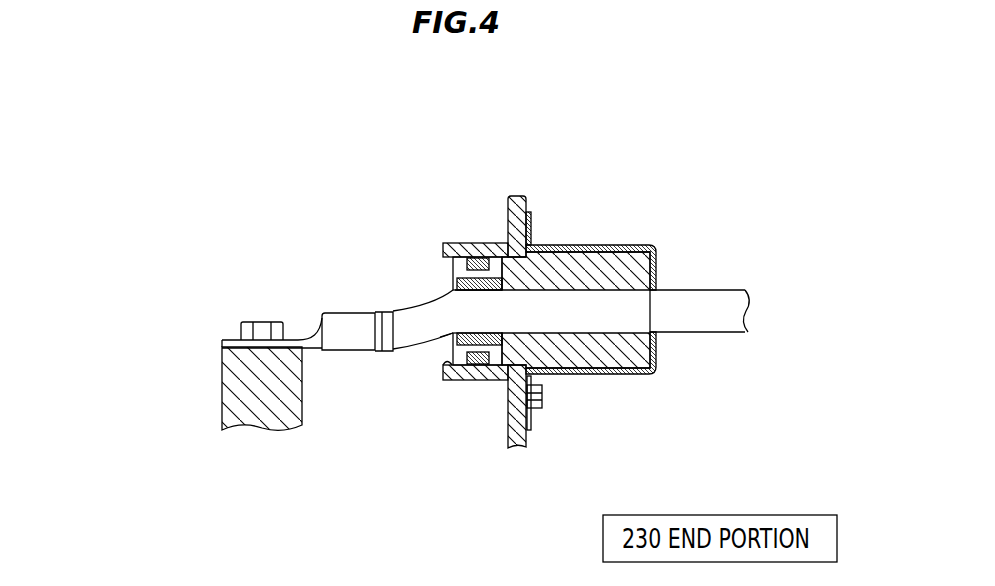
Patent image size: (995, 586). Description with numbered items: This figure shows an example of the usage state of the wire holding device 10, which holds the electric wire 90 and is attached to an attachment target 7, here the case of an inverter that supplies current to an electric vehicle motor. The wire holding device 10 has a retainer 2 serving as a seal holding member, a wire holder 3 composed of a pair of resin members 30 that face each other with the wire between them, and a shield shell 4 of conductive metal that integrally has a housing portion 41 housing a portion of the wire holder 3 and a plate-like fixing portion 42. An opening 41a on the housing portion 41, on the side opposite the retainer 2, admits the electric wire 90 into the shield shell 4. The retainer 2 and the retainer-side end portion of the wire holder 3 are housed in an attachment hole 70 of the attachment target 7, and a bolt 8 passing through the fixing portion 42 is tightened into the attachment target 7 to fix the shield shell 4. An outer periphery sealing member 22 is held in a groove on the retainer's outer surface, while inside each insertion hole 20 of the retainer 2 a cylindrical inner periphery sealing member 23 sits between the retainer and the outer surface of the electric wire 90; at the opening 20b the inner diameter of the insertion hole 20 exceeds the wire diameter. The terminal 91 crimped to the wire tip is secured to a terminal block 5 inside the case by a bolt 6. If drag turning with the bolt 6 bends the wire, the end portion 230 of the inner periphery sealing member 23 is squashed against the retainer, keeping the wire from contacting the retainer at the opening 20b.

The retainer 2 is at (436, 262).
The wire holder 3 is at (737, 210).
The shield shell 4 is at (651, 222).
The terminal block 5 is at (260, 418).
The bolt 6 is at (243, 325).
The attachment target 7 is at (515, 200).
The bolt 8 is at (540, 400).
The wire holding device 10 is at (665, 401).
The insertion hole 20 is at (362, 338).
The opening 20b is at (460, 290).
The outer periphery sealing member 22 is at (460, 250).
The inner periphery sealing member 23 is at (460, 280).
The resin member 30 is at (633, 280).
The housing portion 41 is at (580, 247).
The opening 41a is at (661, 338).
The fixing portion 42 is at (531, 218).
The attachment hole 70 is at (443, 362).
The electric wire 90 is at (735, 311).
The terminal 91 is at (300, 342).
The end portion 230 is at (445, 345).